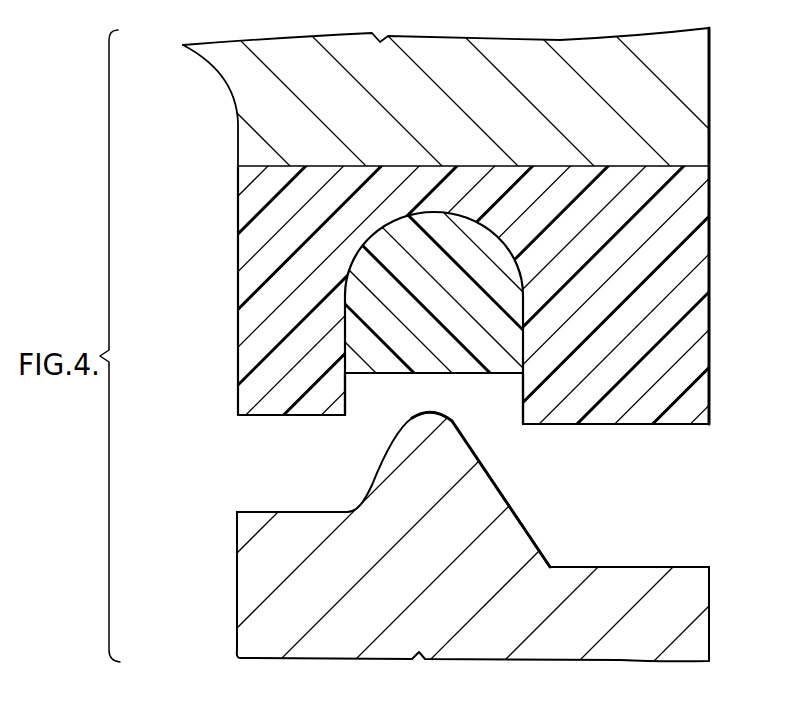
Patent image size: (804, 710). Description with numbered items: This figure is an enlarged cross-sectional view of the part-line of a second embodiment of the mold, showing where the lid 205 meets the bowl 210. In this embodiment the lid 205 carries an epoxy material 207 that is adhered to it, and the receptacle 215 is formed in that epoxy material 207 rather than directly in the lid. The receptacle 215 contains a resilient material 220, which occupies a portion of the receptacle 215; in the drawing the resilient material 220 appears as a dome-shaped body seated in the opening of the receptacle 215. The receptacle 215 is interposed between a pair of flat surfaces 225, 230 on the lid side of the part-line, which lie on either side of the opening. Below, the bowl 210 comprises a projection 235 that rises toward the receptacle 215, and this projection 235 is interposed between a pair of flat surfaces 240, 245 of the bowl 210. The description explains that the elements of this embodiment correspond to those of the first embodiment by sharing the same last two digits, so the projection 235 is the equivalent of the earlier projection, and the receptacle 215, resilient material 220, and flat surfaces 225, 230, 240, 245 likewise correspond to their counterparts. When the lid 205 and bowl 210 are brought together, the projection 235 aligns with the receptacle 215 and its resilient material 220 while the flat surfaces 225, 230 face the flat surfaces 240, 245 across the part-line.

The lid 205 is at (582, 43).
The epoxy material 207 is at (250, 236).
The bowl 210 is at (636, 582).
The receptacle 215 is at (524, 407).
The resilient material 220 is at (517, 272).
The flat surface 225 is at (289, 416).
The flat surface 230 is at (612, 426).
The projection 235 is at (468, 453).
The flat surface 240 is at (290, 512).
The flat surface 245 is at (594, 567).